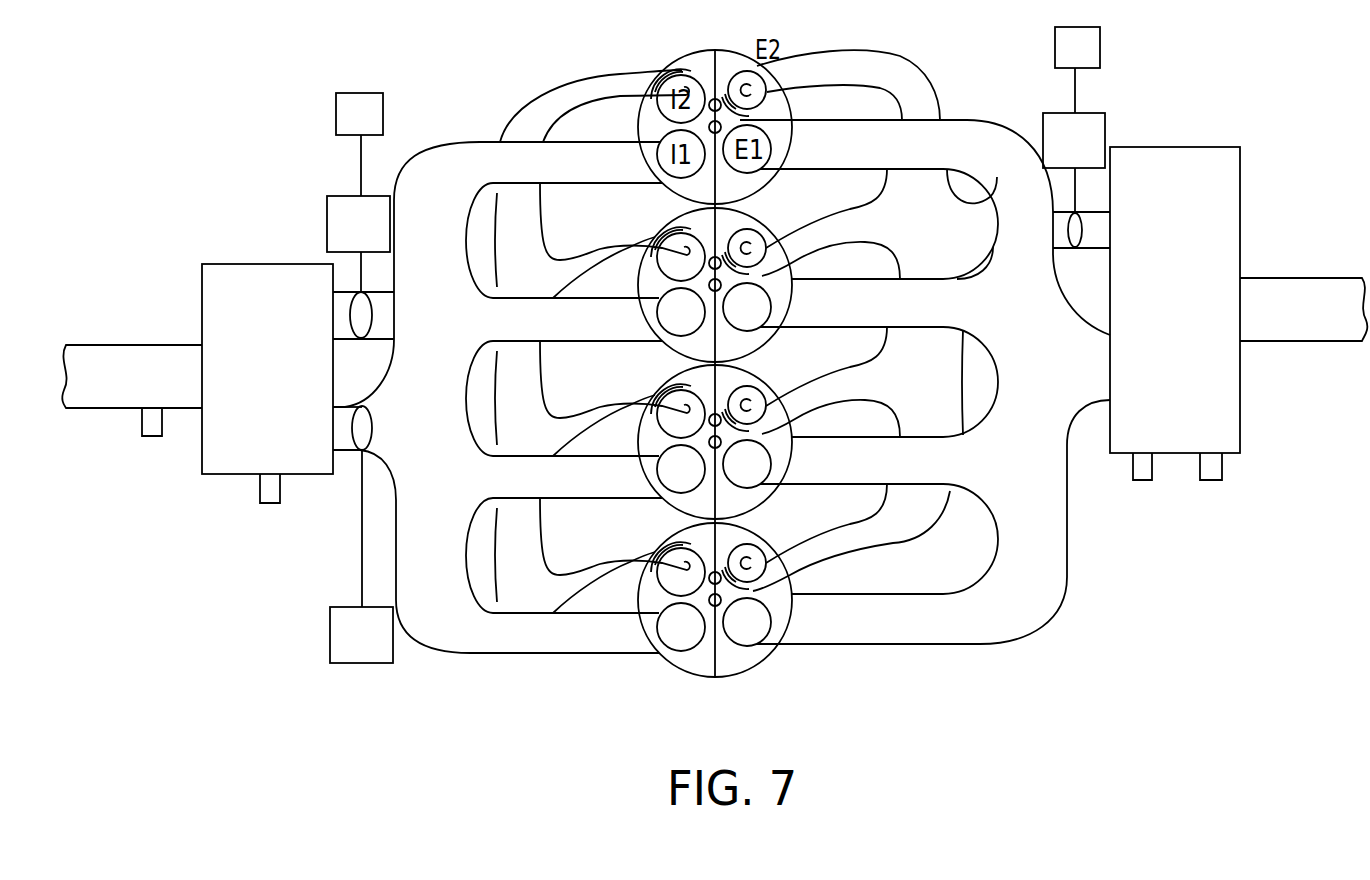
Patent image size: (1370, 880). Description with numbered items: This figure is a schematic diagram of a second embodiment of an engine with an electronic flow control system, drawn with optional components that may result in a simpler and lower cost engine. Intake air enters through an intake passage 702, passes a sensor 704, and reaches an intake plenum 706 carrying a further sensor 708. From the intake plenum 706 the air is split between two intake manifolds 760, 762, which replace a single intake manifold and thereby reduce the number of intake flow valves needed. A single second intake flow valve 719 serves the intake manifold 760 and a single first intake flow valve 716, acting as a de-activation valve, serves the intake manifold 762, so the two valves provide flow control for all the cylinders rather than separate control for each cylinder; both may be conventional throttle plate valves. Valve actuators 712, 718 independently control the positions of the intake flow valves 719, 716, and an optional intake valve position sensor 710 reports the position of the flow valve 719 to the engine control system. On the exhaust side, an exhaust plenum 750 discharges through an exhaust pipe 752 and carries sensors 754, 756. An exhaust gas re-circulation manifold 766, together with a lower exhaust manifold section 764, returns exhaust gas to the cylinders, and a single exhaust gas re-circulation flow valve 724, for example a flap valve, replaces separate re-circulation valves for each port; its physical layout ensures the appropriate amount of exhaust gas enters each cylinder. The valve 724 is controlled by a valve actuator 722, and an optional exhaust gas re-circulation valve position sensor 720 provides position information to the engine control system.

The intake air passage 702 is at (117, 388).
The air flow sensor 704 is at (138, 432).
The intake plenum 706 is at (249, 442).
The intake pressure sensor 708 is at (255, 500).
The intake valve position sensor 710 is at (342, 129).
The valve actuator 712 is at (341, 238).
The first intake flow valve 716 is at (368, 447).
The valve actuator 718 is at (344, 649).
The second intake flow valve 719 is at (380, 291).
The exhaust gas re-circulation valve position sensor 720 is at (1059, 63).
The valve actuator 722 is at (1056, 155).
The exhaust gas re-circulation flow valve 724 is at (1068, 250).
The exhaust plenum 750 is at (1155, 421).
The exhaust pipe 752 is at (1287, 321).
The exhaust gas sensor 754 is at (1130, 478).
The exhaust temperature sensor 756 is at (1197, 478).
The intake manifold 760 is at (507, 287).
The intake manifold 762 is at (419, 363).
The exhaust manifold section 764 is at (1026, 380).
The exhaust gas re-circulation manifold 766 is at (912, 252).